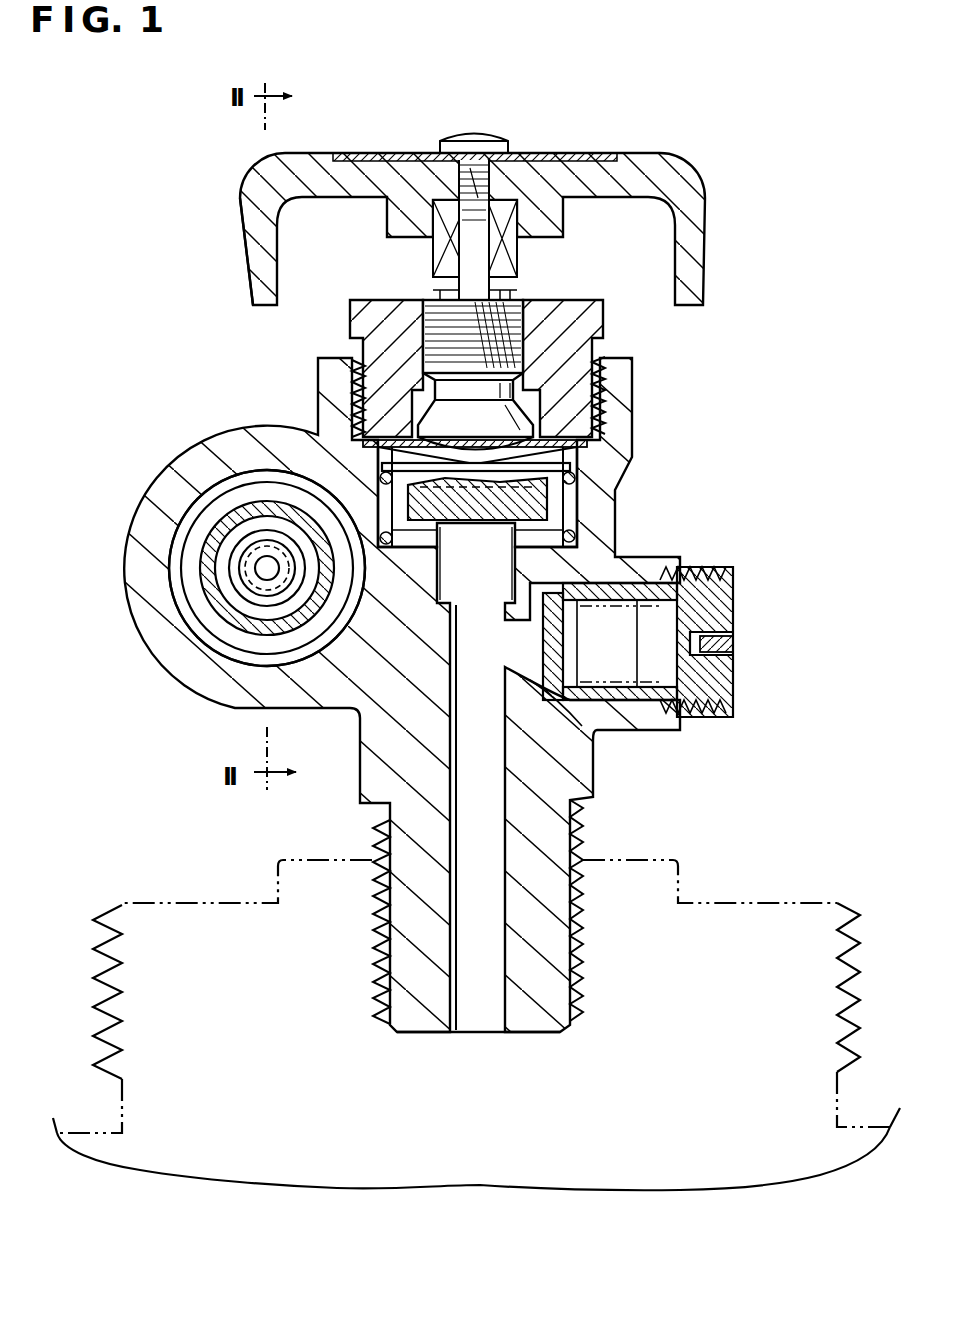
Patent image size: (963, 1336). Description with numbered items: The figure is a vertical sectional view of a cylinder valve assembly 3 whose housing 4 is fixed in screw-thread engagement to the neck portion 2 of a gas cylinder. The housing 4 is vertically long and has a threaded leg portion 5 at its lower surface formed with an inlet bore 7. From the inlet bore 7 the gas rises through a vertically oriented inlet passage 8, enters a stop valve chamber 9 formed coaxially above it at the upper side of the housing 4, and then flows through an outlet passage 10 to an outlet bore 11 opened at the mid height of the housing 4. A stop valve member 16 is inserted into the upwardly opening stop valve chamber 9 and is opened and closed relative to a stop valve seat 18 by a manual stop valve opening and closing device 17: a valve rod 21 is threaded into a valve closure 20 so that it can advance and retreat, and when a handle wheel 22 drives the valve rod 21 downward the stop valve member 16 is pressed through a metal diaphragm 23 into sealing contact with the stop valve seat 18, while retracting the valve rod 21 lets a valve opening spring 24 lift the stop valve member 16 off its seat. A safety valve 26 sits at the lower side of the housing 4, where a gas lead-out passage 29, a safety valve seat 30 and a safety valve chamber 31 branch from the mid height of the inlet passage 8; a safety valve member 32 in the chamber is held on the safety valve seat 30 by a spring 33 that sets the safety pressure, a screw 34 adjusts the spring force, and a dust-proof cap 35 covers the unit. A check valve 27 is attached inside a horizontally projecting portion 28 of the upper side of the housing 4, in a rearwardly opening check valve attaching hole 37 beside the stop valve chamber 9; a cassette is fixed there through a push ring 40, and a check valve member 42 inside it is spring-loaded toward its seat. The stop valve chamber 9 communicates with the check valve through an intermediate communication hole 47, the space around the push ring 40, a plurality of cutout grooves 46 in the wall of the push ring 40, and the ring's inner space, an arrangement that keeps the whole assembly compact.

The neck portion 2 is at (777, 896).
The cylinder valve assembly 3 is at (203, 321).
The housing 4 is at (356, 778).
The threaded leg portion 5 is at (376, 966).
The inlet bore 7 is at (488, 1036).
The inlet passage 8 is at (493, 908).
The stop valve chamber 9 is at (572, 470).
The outlet passage 10 is at (220, 630).
The outlet bore 11 is at (213, 607).
The stop valve member 16 is at (582, 461).
The manual stop valve opening and closing device 17 is at (240, 196).
The stop valve seat 18 is at (574, 541).
The valve closure 20 is at (604, 312).
The valve rod 21 is at (560, 390).
The handle wheel 22 is at (252, 265).
The metal diaphragm 23 is at (568, 440).
The valve opening spring 24 is at (578, 491).
The safety valve 26 is at (688, 670).
The check valve 27 is at (203, 484).
The horizontally projecting portion 28 is at (186, 476).
The gas lead-out passage 29 is at (590, 800).
The safety valve seat 30 is at (598, 753).
The safety valve chamber 31 is at (652, 702).
The safety valve member 32 is at (614, 702).
The spring 33 is at (734, 685).
The screw 34 is at (713, 608).
The dust-proof cap 35 is at (724, 648).
The check valve attaching hole 37 is at (228, 476).
The push ring 40 is at (240, 586).
The check valve member 42 is at (275, 600).
The cutout grooves 46 is at (178, 503).
The intermediate communication hole 47 is at (312, 436).